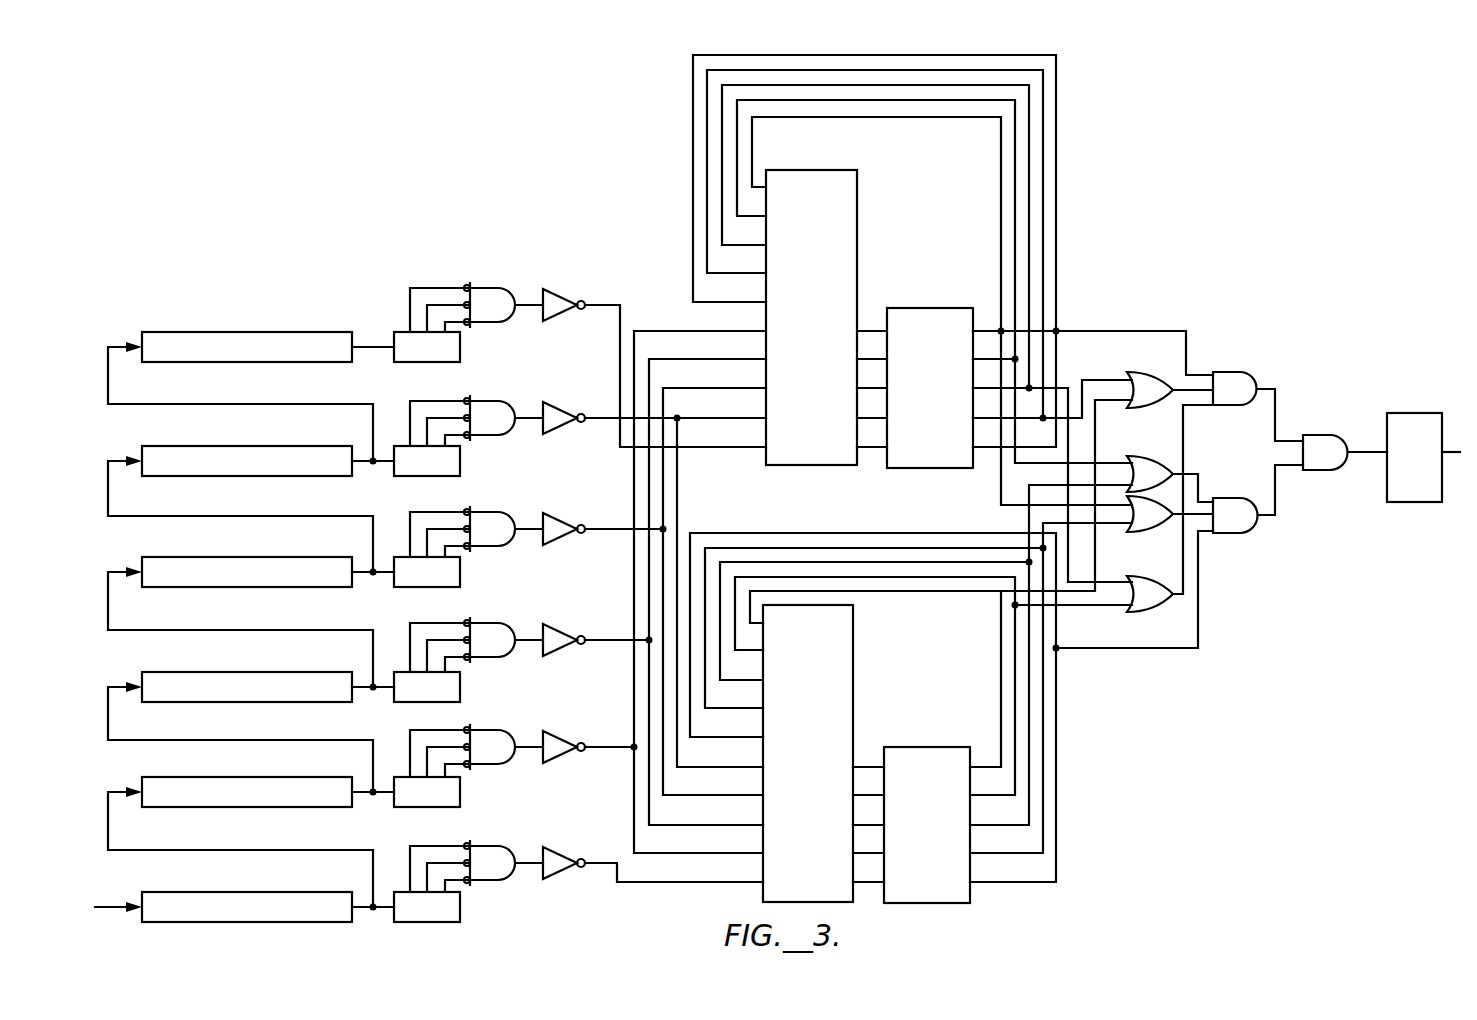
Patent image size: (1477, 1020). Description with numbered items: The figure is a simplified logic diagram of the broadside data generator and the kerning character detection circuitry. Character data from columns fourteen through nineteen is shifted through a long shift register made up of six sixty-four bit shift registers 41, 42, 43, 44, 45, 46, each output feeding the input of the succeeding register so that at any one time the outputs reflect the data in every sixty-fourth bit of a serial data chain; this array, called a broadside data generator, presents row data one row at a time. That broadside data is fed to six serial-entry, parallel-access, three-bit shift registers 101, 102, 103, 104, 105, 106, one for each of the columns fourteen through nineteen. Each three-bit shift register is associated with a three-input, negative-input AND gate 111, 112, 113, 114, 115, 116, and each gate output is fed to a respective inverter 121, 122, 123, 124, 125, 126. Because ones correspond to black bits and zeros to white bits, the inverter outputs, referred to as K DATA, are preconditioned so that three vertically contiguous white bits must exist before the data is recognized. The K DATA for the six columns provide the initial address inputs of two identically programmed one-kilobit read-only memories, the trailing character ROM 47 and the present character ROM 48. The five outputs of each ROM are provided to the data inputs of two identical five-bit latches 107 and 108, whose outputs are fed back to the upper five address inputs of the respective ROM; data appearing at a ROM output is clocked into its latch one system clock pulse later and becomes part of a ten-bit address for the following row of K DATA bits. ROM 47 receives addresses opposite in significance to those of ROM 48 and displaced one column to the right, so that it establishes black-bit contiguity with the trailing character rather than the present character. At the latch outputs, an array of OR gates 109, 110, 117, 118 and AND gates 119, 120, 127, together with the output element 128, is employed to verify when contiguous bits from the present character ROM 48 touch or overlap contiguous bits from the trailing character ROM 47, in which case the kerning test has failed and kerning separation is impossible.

The shift register 41 is at (322, 892).
The shift register 42 is at (322, 777).
The shift register 43 is at (322, 672).
The shift register 44 is at (322, 557).
The shift register 45 is at (322, 446).
The shift register 46 is at (322, 332).
The trailing character ROM 47 is at (853, 630).
The present character ROM 48 is at (857, 190).
The three-bit shift register 101 is at (462, 909).
The three-bit shift register 102 is at (462, 794).
The three-bit shift register 103 is at (462, 689).
The three-bit shift register 104 is at (462, 574).
The three-bit shift register 105 is at (462, 463).
The three-bit shift register 106 is at (462, 349).
The five bit latch 107 is at (940, 747).
The five bit latch 108 is at (940, 308).
The OR gate 109 is at (1137, 372).
The OR gate 110 is at (1137, 456).
The negative input AND gate 111 is at (487, 846).
The negative input AND gate 112 is at (487, 730).
The negative input AND gate 113 is at (487, 623).
The negative input AND gate 114 is at (487, 512).
The negative input AND gate 115 is at (487, 401).
The negative input AND gate 116 is at (487, 288).
The OR gate 117 is at (1140, 532).
The OR gate 118 is at (1140, 612).
The AND gate 119 is at (1225, 498).
The AND gate 120 is at (1240, 372).
The inverter 121 is at (560, 855).
The inverter 122 is at (560, 739).
The inverter 123 is at (560, 632).
The inverter 124 is at (560, 521).
The inverter 125 is at (560, 410).
The inverter 126 is at (560, 297).
The AND gate 127 is at (1325, 435).
The D flip-flop 128 is at (1415, 413).